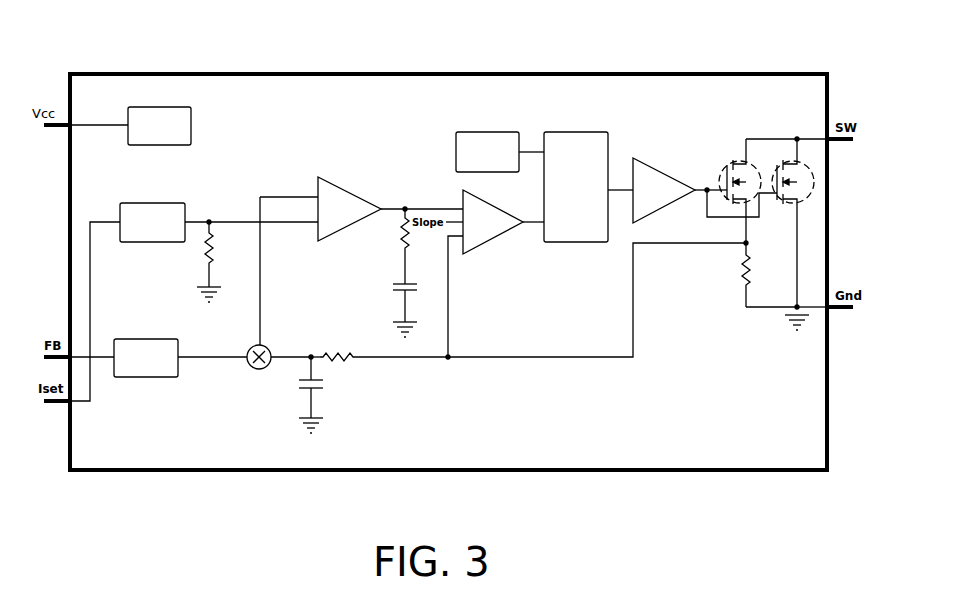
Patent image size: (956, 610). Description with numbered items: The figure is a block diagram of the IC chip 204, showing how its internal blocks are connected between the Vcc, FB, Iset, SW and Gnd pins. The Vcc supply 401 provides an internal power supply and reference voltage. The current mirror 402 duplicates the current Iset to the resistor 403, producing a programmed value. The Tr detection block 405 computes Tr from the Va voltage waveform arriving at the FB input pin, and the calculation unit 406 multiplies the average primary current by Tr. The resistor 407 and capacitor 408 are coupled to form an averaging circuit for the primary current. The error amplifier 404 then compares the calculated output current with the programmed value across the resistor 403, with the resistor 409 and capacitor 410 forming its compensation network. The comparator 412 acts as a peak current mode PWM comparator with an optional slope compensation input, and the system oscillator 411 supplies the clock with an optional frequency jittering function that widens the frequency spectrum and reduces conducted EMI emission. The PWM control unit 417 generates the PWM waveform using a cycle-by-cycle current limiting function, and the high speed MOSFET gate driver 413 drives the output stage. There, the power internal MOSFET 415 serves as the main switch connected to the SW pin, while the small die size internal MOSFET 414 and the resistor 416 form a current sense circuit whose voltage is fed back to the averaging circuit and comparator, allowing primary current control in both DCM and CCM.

The IC chip 204 is at (556, 48).
The Vcc supply 401 is at (192, 127).
The current mirror 402 is at (157, 203).
The resistor 403 is at (205, 260).
The error amplifier 404 is at (367, 200).
The Tr detection 405 is at (144, 339).
The calculation unit 406 is at (250, 348).
The resistor 407 is at (331, 352).
The capacitor 408 is at (307, 391).
The resistor 409 is at (401, 245).
The capacitor 410 is at (400, 292).
The system oscillator 411 is at (500, 132).
The comparator 412 is at (503, 211).
The MOSFET gate driver 413 is at (675, 177).
The internal MOSFET 414 is at (733, 161).
The power internal MOSFET 415 is at (790, 205).
The resistor 416 is at (743, 273).
The PWM control unit 417 is at (564, 232).